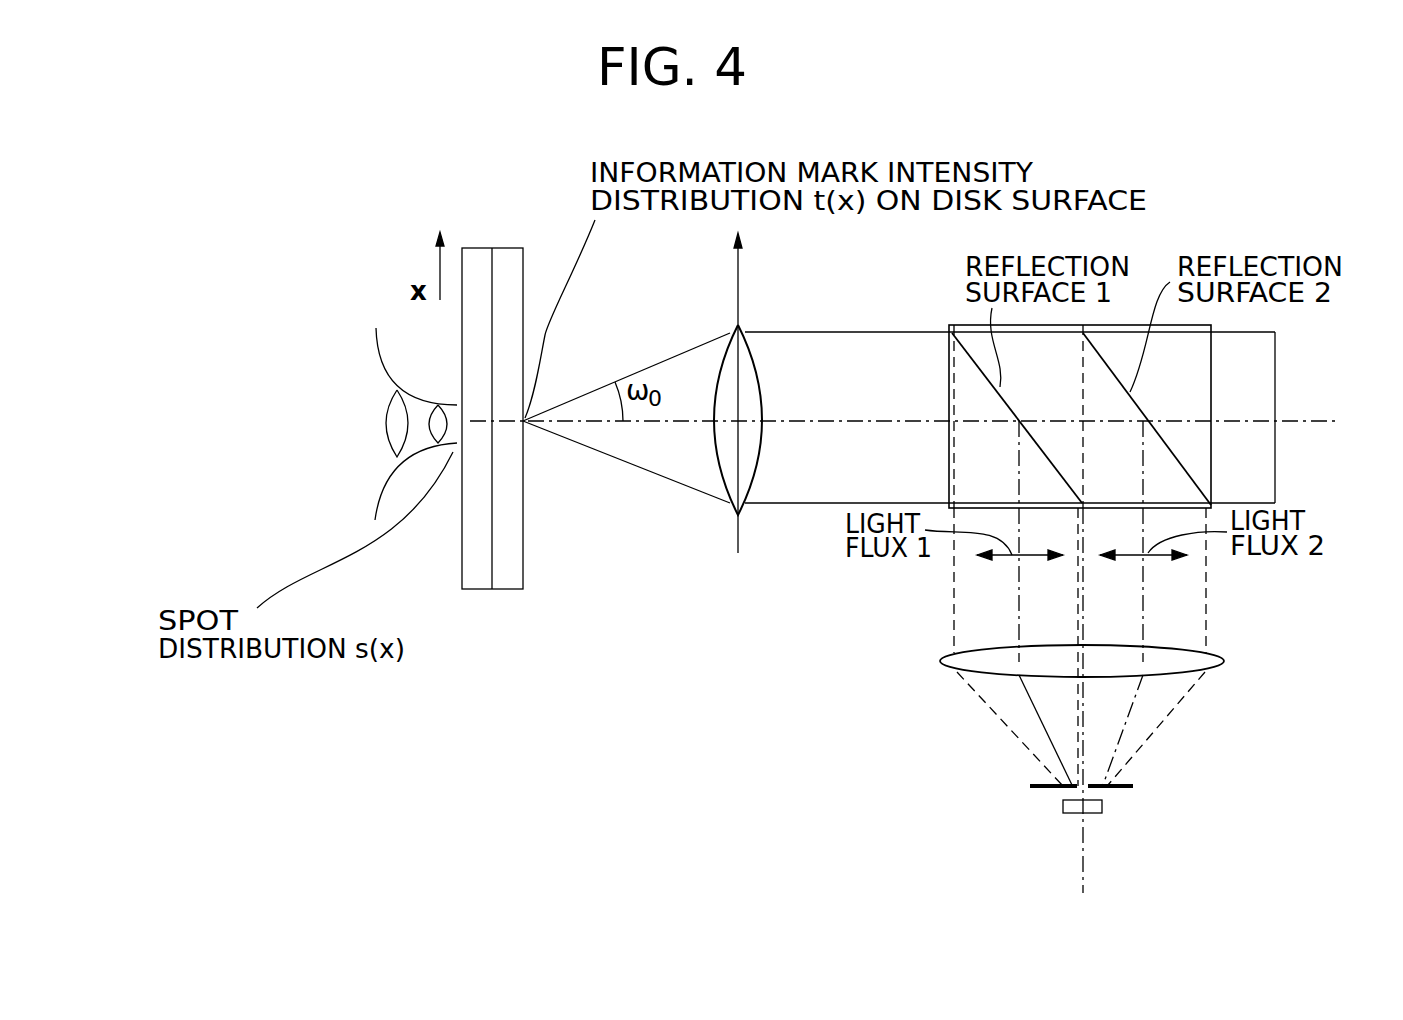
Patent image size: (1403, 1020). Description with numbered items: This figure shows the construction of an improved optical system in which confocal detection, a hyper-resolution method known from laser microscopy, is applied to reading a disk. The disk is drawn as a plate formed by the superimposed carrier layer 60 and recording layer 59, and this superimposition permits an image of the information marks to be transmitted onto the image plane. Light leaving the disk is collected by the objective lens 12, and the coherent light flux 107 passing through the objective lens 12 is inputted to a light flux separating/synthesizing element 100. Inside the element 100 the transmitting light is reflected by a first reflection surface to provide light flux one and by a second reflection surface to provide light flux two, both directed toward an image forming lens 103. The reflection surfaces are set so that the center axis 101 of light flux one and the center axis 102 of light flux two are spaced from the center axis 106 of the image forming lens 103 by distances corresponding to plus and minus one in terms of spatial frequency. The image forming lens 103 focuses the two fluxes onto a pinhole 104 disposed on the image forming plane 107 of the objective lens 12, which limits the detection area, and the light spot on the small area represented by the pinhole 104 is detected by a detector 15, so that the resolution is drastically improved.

The objective lens 12 is at (745, 323).
The recording layer 59 is at (523, 568).
The carrier layer 60 is at (480, 590).
The light flux separating/synthesizing element 100 is at (1212, 383).
The center axis of light flux 1 101 is at (1020, 640).
The center axis of light flux 2 102 is at (1145, 635).
The image forming lens 103 is at (1212, 670).
The pinhole 104 is at (1062, 784).
The center axis of the image forming lens 106 is at (1083, 833).
The image forming plane / coherent light flux 107 is at (1133, 786).
The detector 15 is at (1102, 807).